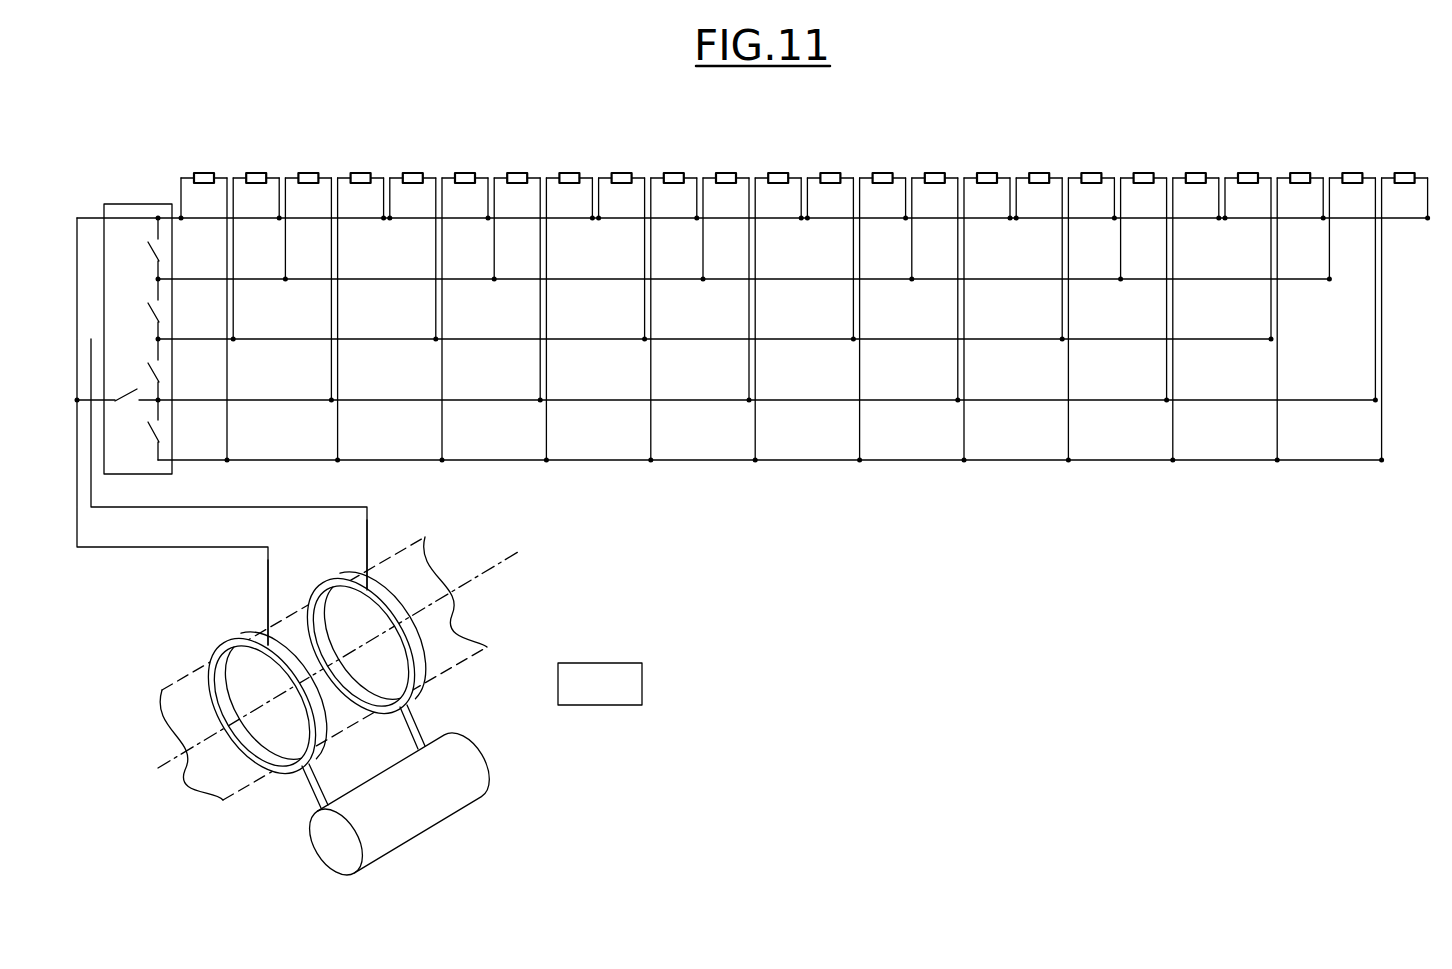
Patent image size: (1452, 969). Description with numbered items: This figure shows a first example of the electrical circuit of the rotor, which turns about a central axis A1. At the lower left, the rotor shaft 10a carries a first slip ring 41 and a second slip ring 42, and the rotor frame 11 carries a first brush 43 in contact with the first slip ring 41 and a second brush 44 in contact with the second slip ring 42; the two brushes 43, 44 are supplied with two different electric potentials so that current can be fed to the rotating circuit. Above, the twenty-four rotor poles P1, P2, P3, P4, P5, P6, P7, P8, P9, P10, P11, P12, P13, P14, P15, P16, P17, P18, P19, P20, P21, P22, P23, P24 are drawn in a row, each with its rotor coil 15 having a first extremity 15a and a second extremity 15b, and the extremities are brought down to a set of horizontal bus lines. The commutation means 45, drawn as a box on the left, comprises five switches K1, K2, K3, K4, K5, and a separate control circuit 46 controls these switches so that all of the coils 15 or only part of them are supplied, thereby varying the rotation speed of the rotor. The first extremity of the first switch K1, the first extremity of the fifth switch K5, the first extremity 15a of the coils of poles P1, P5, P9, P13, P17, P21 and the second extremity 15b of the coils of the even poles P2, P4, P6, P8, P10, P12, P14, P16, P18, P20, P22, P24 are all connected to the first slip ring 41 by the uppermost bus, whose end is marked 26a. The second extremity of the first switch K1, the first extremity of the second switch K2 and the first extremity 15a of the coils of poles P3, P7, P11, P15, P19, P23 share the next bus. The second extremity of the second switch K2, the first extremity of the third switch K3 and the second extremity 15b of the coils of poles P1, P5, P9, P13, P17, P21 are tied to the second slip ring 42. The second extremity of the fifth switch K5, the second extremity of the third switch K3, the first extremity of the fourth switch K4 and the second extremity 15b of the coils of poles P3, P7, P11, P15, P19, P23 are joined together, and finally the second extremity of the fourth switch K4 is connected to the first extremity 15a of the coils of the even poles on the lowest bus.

The rotor coil 15 is at (194, 170).
The first extremity 15a is at (790, 333).
The second extremity 15b is at (810, 303).
The terminal 26a is at (763, 232).
The commutation means 45 is at (138, 204).
The first switch K1 is at (138, 248).
The second switch K2 is at (138, 309).
The third switch K3 is at (138, 369).
The fourth switch K4 is at (143, 430).
The fifth switch K5 is at (122, 409).
The rotor pole P1 is at (203, 171).
The rotor pole P2 is at (256, 145).
The rotor pole P3 is at (308, 145).
The rotor pole P4 is at (361, 145).
The rotor pole P5 is at (413, 145).
The rotor pole P6 is at (465, 145).
The rotor pole P7 is at (517, 145).
The rotor pole P8 is at (569, 145).
The rotor pole P9 is at (622, 145).
The rotor pole P10 is at (673, 145).
The rotor pole P11 is at (725, 145).
The rotor pole P12 is at (778, 145).
The rotor pole P13 is at (830, 145).
The rotor pole P14 is at (882, 145).
The rotor pole P15 is at (934, 145).
The rotor pole P16 is at (986, 145).
The rotor pole P17 is at (1039, 145).
The rotor pole P18 is at (1091, 145).
The rotor pole P19 is at (1143, 145).
The rotor pole P20 is at (1195, 145).
The rotor pole P21 is at (1247, 145).
The rotor pole P22 is at (1300, 145).
The rotor pole P23 is at (1352, 145).
The rotor pole P24 is at (1404, 145).
The rotor shaft 10a is at (392, 558).
The central axis A1 is at (500, 567).
The first slip ring 41 is at (230, 641).
The second slip ring 42 is at (329, 584).
The first brush 43 is at (310, 793).
The second brush 44 is at (422, 723).
The rotor frame 11 is at (480, 757).
The control circuit 46 is at (600, 684).